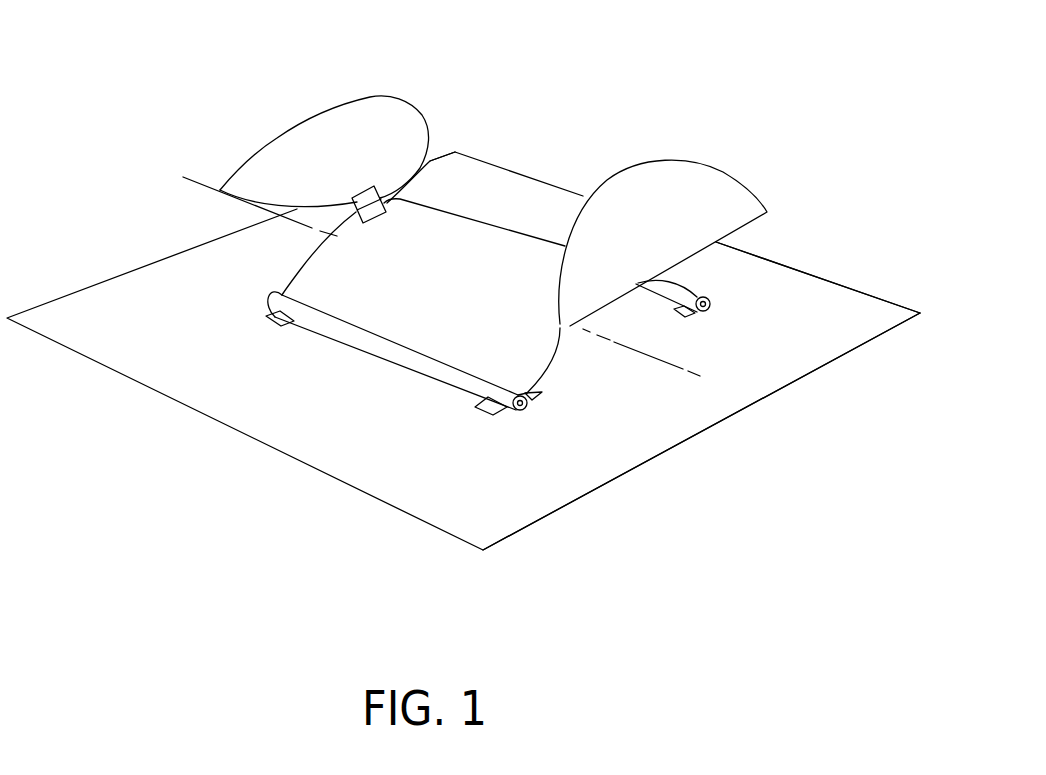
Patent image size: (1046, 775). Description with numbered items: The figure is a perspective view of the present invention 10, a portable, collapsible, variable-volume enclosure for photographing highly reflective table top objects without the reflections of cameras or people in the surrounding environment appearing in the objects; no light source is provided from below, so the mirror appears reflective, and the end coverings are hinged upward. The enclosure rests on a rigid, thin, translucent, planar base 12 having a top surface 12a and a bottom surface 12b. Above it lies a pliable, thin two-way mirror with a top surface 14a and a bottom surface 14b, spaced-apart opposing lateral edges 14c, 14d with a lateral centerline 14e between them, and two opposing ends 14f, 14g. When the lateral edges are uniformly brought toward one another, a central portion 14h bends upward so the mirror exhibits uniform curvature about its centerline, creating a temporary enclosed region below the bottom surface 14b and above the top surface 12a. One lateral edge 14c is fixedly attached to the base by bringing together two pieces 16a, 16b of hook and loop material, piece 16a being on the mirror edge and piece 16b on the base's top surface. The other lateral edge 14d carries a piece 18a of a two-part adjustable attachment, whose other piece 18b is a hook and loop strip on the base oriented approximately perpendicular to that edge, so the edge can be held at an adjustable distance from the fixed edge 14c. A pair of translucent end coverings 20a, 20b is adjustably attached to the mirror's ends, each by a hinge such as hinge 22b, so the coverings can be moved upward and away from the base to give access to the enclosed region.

The present invention 10 is at (708, 92).
The base 12 is at (823, 371).
The top surface 12a is at (847, 300).
The bottom surface 12b is at (723, 422).
The top surface 14a is at (420, 231).
The bottom surface 14b is at (542, 368).
The lateral edge 14c is at (699, 311).
The lateral edge 14d is at (527, 416).
The lateral centerline 14e is at (663, 363).
The end 14f is at (684, 283).
The end 14g is at (390, 203).
The central portion 14h is at (452, 280).
The piece of hook and loop material 16a is at (697, 317).
The piece of hook and loop material 16b is at (711, 301).
The piece of adjustable attachment means 18a is at (377, 353).
The piece of adjustable attachment means 18b is at (268, 318).
The end covering 20a is at (712, 186).
The end covering 20b is at (385, 113).
The hinge 22b is at (360, 190).